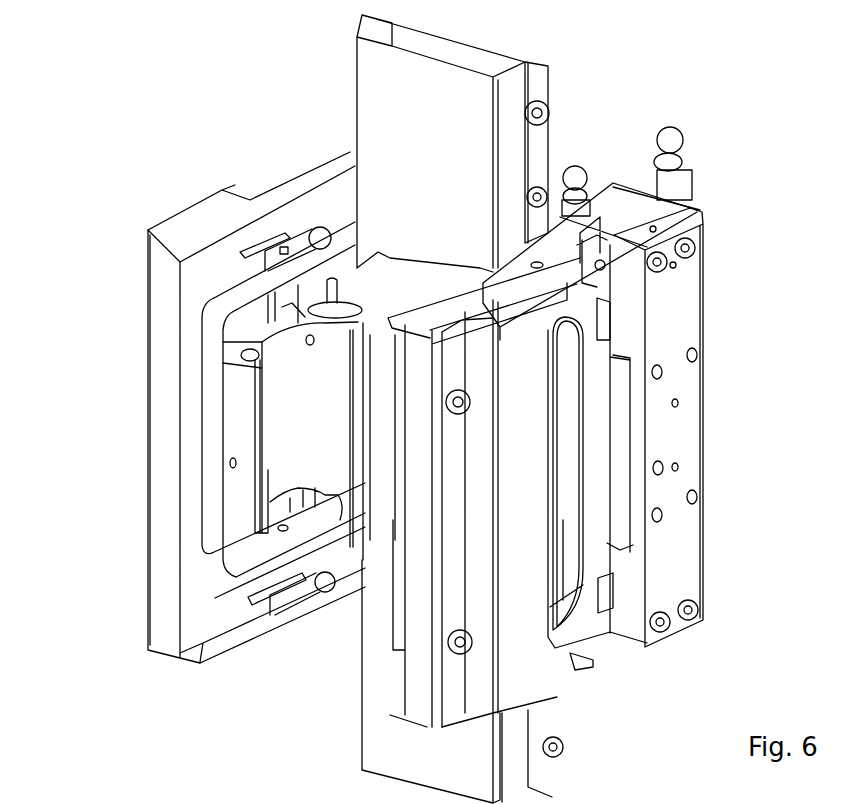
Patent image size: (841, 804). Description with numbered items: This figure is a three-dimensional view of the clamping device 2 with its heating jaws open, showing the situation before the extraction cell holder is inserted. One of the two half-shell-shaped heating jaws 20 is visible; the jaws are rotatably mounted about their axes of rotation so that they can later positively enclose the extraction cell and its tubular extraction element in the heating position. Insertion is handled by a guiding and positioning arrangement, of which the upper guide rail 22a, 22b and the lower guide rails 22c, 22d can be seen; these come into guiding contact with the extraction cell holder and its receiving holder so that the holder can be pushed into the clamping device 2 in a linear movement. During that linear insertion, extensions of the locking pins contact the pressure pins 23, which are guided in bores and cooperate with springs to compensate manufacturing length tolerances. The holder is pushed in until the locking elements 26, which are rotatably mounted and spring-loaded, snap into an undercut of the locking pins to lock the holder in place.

The clamping device 2 is at (211, 99).
The heating jaw 20 is at (303, 420).
The upper guide rail 22a is at (192, 293).
The upper guide rail 22b is at (400, 374).
The lower guide rail 22c is at (202, 617).
The lower guide rail 22d is at (398, 712).
The pressure pin 23 is at (337, 225).
The locking element 26 is at (283, 242).